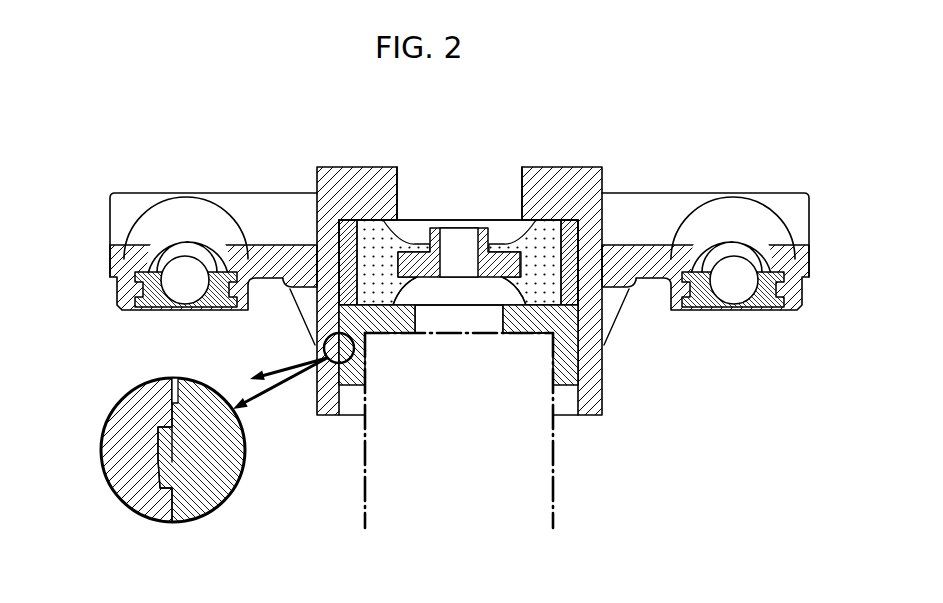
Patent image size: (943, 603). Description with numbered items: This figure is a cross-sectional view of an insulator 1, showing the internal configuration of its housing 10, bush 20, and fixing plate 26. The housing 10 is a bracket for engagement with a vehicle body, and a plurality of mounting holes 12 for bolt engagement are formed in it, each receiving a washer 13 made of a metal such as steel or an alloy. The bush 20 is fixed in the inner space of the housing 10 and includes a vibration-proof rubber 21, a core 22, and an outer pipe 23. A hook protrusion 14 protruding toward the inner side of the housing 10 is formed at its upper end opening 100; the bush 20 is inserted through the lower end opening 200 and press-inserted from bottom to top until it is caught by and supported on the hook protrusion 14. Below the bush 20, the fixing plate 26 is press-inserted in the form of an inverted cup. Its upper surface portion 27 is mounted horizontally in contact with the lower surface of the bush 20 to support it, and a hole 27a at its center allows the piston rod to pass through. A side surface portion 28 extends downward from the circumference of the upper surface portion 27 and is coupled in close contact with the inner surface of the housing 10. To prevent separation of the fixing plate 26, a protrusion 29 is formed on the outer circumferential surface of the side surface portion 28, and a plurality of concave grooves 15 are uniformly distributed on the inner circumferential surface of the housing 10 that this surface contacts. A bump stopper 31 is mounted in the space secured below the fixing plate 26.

The insulator 1 is at (711, 133).
The housing 10 is at (325, 268).
The mounting hole 12 is at (735, 283).
The washer 13 is at (743, 247).
The hook protrusion 14 is at (377, 190).
The concave groove 15 is at (176, 378).
The bush 20 is at (560, 217).
The vibration-proof rubber 21 is at (545, 240).
The core 22 is at (506, 258).
The outer pipe 23 is at (578, 287).
The fixing plate 26 is at (510, 336).
The upper surface portion 27 is at (395, 323).
The hole 27a is at (437, 333).
The side surface portion 28 is at (352, 388).
The protrusion 29 is at (163, 420).
The bump stopper 31 is at (560, 455).
The upper end opening 100 is at (398, 190).
The lower end opening 200 is at (572, 403).